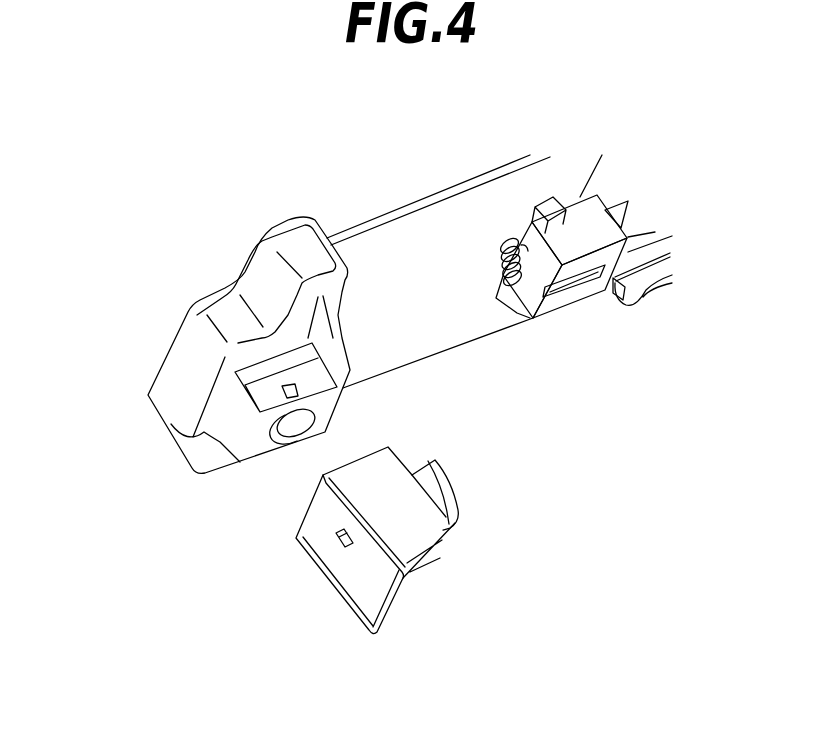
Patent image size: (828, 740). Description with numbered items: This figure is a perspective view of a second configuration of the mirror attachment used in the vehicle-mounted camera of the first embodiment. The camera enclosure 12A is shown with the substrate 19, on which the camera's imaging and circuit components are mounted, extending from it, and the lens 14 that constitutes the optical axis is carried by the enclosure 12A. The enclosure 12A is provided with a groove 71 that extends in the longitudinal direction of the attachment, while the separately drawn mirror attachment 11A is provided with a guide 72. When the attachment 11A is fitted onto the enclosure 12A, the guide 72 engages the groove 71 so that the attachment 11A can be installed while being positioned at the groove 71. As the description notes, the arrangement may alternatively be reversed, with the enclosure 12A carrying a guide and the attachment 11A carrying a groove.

The substrate 19 is at (418, 247).
The enclosure 12A is at (218, 413).
The lens 14 is at (378, 421).
The groove 71 is at (380, 540).
The guide 72 is at (337, 534).
The attachment 11A is at (428, 560).